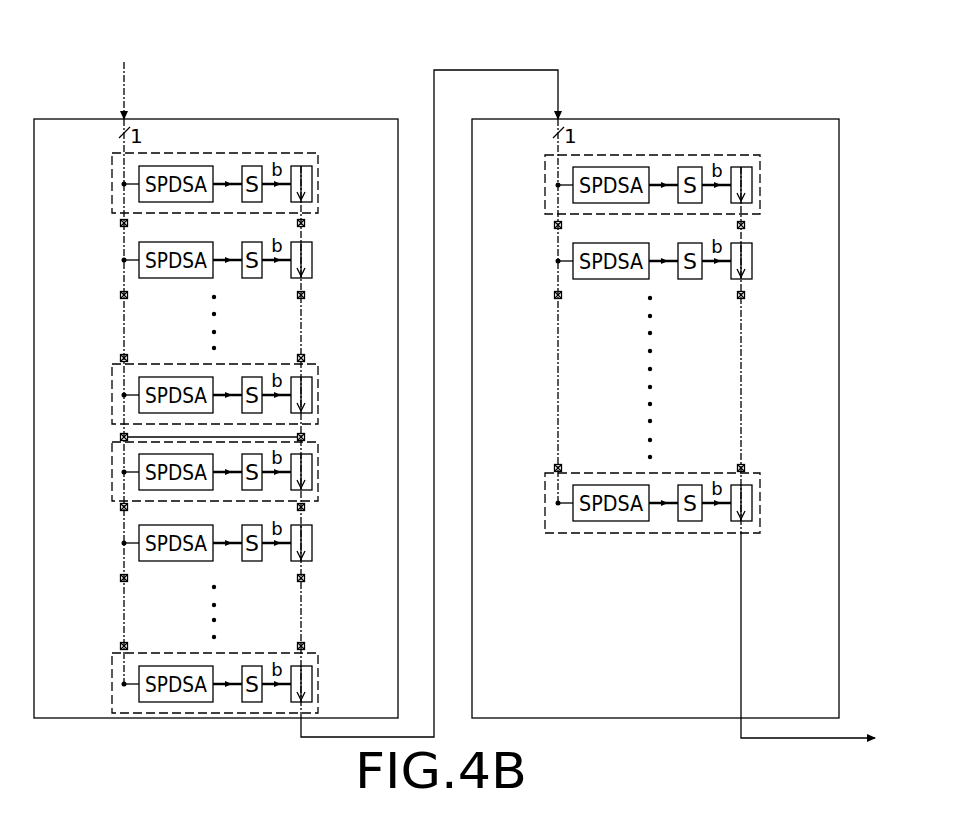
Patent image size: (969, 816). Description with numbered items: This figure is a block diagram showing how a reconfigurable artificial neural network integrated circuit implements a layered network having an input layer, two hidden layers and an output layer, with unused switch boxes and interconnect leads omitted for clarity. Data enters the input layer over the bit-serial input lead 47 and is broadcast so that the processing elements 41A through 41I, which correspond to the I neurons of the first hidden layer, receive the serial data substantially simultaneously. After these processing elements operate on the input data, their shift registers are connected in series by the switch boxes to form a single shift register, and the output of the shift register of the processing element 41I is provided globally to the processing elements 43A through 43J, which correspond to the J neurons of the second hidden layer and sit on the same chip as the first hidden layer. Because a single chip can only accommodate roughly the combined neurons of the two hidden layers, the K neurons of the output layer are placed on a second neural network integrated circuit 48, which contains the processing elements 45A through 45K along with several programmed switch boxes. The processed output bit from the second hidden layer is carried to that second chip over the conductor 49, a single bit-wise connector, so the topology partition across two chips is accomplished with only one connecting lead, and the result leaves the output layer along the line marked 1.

The bit-serial input lead 47 is at (125, 85).
The conductor 49 is at (493, 70).
The neural network integrated circuit 48 is at (683, 119).
The processing element 41A is at (303, 150).
The processing element 41I is at (320, 393).
The processing element 43A is at (320, 472).
The processing element 43J is at (320, 684).
The processing element 45A is at (762, 187).
The processing element 45K is at (760, 505).
The signal line 1 is at (835, 744).